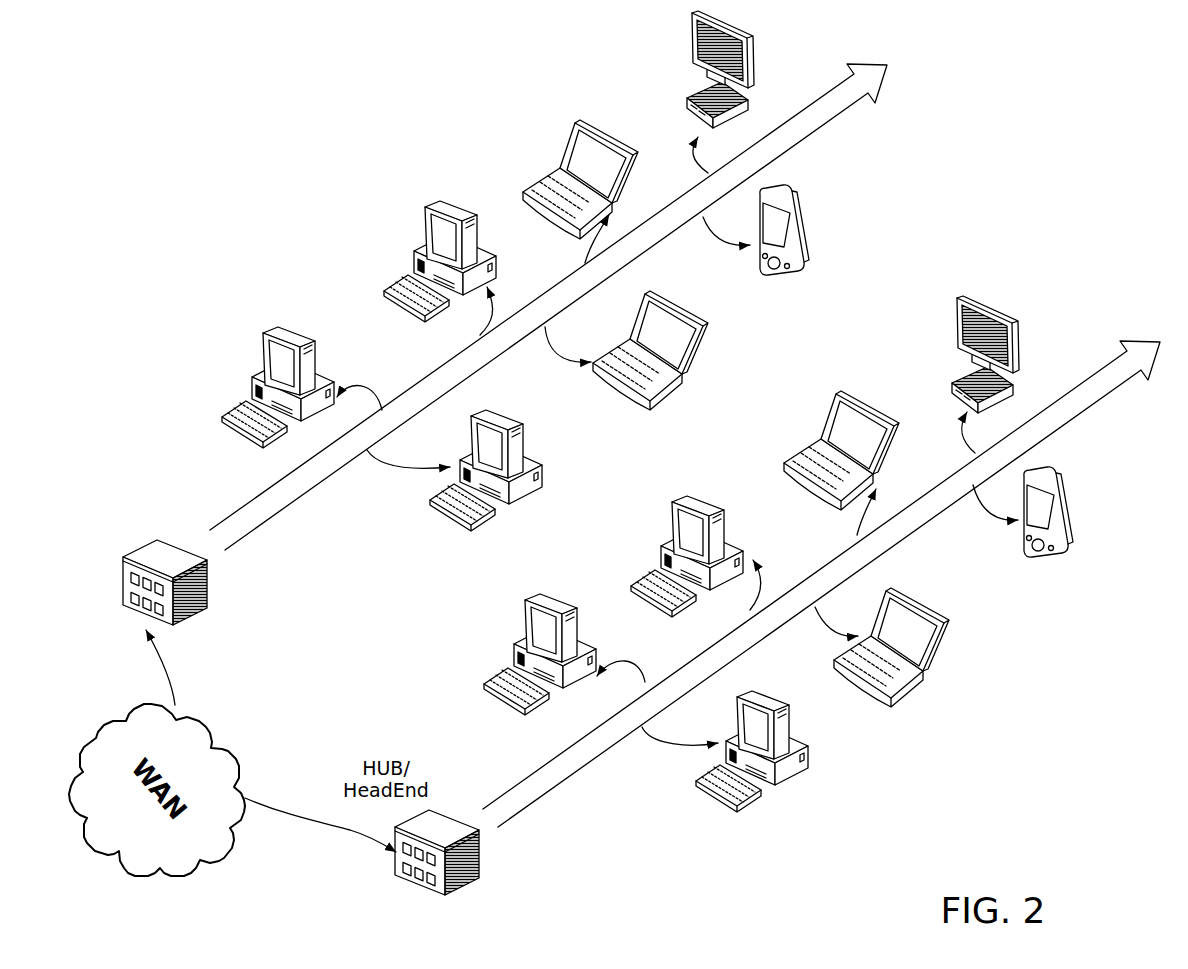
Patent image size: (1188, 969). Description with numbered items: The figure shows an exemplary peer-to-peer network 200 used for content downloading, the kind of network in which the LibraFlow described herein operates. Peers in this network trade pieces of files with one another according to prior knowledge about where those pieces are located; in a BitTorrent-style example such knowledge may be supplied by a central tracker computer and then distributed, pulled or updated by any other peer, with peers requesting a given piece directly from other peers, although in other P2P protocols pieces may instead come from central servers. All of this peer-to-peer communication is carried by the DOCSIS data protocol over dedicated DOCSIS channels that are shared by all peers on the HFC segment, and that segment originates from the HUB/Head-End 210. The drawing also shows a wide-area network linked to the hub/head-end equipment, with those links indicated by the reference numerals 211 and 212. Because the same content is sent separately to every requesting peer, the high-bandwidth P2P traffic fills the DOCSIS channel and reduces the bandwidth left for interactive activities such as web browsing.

The content delivery network system 200 is at (1052, 838).
The HUB/Head-End 210 is at (217, 608).
The link from WAN to hub 211 is at (220, 743).
The link from WAN to hub 212 is at (282, 810).